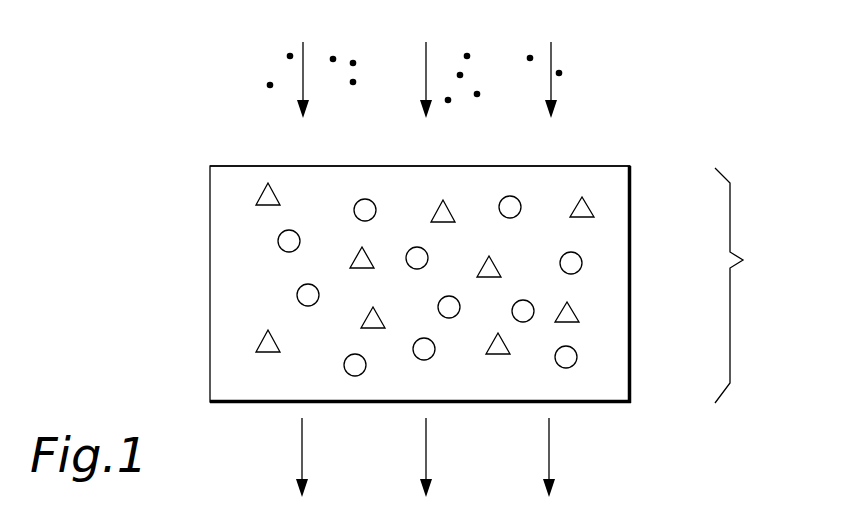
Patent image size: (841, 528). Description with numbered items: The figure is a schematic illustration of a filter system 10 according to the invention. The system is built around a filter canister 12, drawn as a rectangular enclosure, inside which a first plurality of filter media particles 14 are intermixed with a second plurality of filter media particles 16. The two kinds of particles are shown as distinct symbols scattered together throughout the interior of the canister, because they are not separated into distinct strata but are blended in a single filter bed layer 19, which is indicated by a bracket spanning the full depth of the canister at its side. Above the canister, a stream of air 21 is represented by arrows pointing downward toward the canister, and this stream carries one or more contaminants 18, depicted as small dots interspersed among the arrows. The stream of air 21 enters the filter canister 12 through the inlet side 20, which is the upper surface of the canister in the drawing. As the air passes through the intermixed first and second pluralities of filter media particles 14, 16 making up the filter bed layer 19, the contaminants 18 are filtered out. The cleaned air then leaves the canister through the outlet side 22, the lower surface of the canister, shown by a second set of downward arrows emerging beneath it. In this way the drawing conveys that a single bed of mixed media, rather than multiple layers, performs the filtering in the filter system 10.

The filter system 10 is at (152, 70).
The filter canister 12 is at (208, 290).
The first plurality of filter media particles 14 is at (352, 260).
The second plurality of filter media particles 16 is at (300, 297).
The contaminants 18 is at (270, 85).
The filter bed layer 19 is at (747, 285).
The inlet side 20 is at (582, 165).
The stream of air 21 is at (426, 60).
The outlet side 22 is at (582, 405).